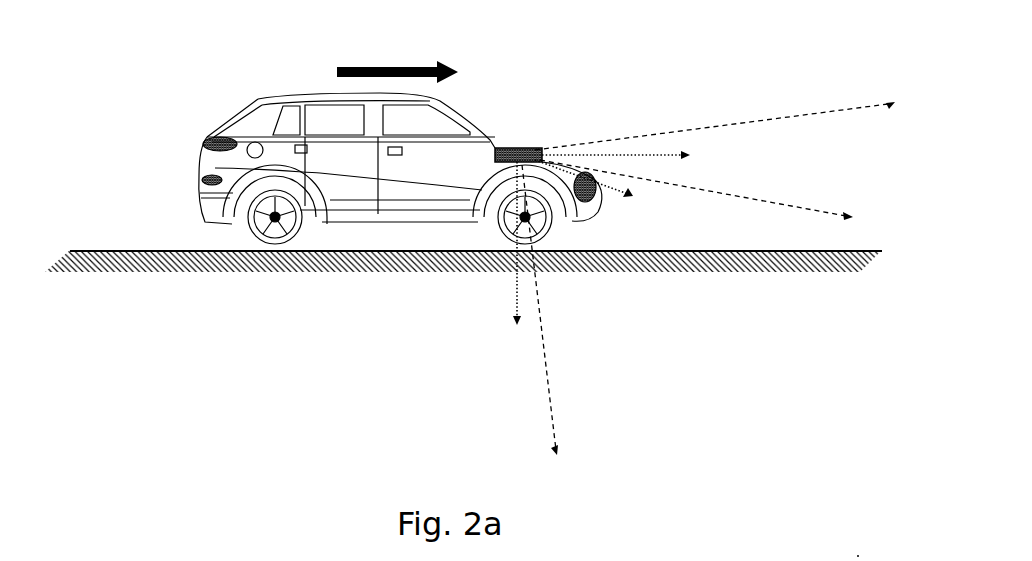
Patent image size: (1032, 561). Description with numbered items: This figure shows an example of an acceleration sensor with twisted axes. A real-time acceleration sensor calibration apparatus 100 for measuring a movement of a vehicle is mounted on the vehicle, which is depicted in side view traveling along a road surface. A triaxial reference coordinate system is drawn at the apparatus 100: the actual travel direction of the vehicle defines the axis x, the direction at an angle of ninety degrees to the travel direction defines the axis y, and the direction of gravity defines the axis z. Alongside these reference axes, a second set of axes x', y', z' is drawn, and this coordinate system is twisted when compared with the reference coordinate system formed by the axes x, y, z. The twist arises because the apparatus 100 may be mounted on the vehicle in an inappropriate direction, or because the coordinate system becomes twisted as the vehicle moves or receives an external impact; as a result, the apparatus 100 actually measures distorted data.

The real-time acceleration sensor calibration apparatus 100 is at (521, 148).
The axis x is at (621, 161).
The axis y is at (591, 189).
The axis z is at (508, 243).
The axis x' is at (718, 126).
The axis y' is at (700, 202).
The axis z' is at (540, 320).